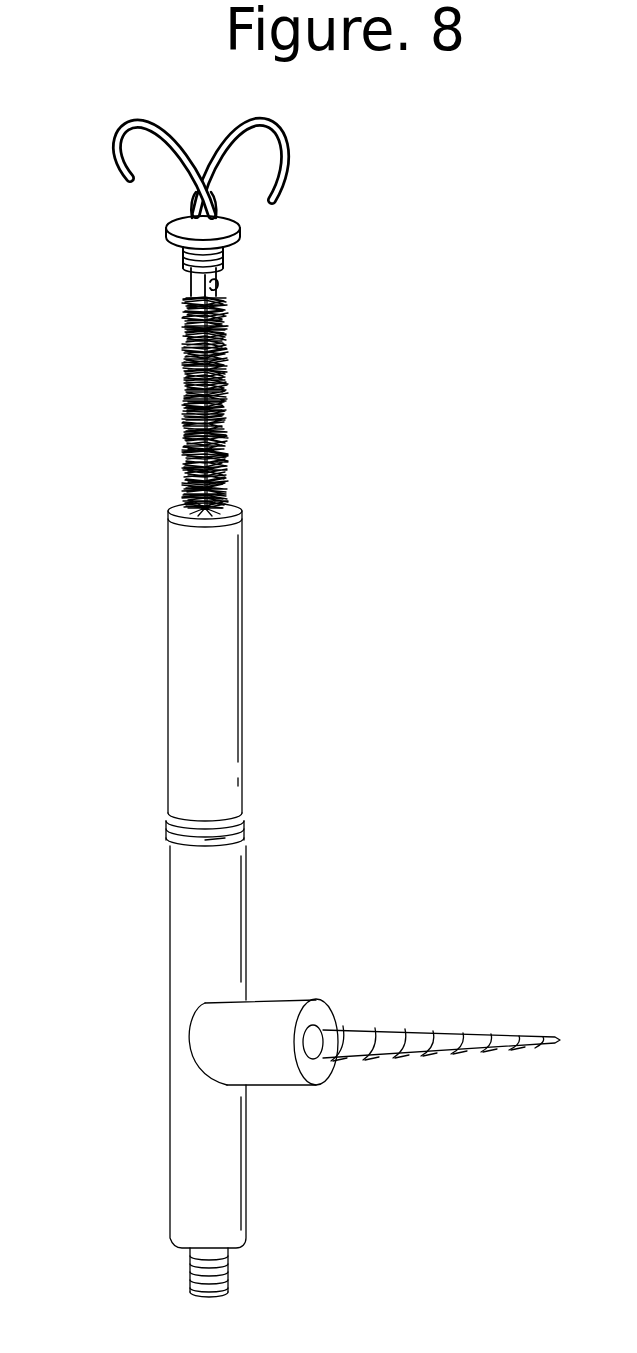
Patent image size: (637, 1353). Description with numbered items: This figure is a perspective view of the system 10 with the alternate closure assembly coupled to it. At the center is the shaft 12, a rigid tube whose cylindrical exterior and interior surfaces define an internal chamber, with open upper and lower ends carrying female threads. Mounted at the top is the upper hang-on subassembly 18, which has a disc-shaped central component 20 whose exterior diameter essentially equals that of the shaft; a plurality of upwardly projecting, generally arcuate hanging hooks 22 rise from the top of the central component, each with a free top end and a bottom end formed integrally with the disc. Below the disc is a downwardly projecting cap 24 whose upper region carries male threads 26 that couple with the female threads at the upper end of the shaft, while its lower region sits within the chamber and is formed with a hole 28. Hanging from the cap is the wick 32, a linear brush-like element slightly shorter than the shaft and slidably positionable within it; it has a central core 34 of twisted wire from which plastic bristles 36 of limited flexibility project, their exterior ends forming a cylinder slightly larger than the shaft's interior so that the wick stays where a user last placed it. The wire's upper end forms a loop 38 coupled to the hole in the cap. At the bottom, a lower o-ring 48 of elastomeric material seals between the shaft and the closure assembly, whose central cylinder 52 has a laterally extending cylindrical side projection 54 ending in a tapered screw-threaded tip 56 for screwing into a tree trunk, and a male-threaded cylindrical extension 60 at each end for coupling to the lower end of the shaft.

The cleaning tool 10 is at (410, 613).
The shaft 12 is at (232, 723).
The upper hang-on subassembly 18 is at (271, 139).
The disc-shaped central component 20 is at (172, 244).
The hanging hooks 22 is at (240, 128).
The cap 24 is at (225, 270).
The male threads 26 is at (190, 276).
The hole 28 is at (220, 288).
The wick 32 is at (228, 406).
The central core 34 is at (232, 434).
The bristles 36 is at (232, 488).
The loop 38 is at (220, 287).
The lower o-ring 48 is at (243, 836).
The central cylinder 52 is at (184, 934).
The side projection 54 is at (278, 1070).
The tapered screw-threaded tip 56 is at (441, 1030).
The cylindrical extension 60 is at (220, 1274).